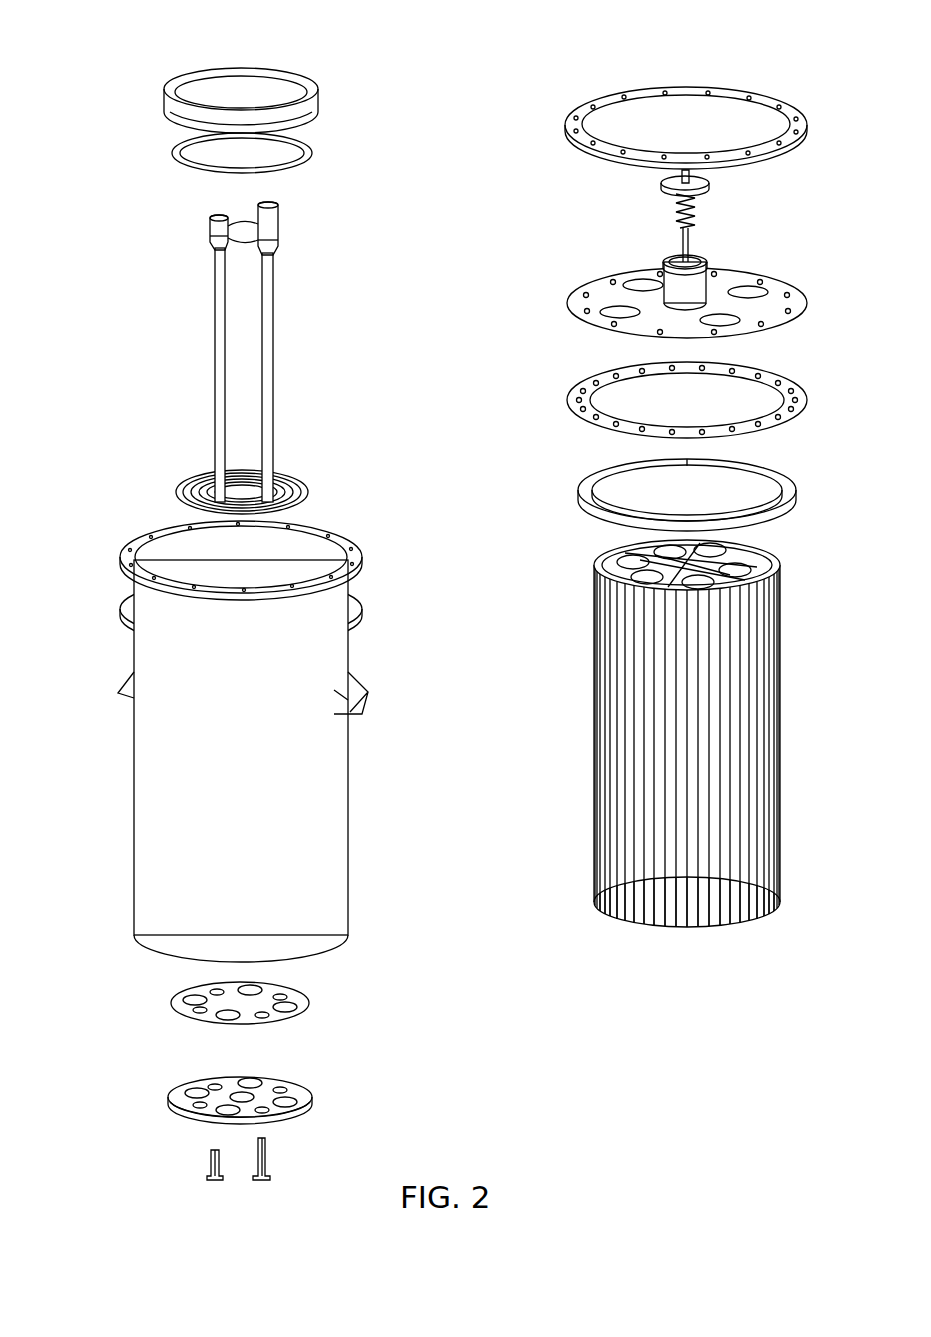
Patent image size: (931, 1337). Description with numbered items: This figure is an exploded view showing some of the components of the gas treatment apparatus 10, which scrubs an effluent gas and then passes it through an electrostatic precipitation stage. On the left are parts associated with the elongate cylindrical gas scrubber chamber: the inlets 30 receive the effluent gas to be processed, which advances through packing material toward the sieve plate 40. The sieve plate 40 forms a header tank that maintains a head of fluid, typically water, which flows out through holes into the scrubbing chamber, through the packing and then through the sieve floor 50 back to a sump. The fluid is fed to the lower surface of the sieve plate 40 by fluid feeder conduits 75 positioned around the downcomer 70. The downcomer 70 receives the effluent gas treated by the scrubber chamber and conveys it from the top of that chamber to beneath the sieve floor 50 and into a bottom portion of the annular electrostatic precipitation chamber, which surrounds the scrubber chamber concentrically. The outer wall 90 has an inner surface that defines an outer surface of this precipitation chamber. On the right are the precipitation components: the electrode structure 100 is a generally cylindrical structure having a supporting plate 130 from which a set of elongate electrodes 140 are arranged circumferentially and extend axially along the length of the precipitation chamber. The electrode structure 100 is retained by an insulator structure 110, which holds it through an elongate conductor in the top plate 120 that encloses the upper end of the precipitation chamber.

The gas treatment apparatus 10 is at (108, 42).
The inlets 30 is at (195, 1000).
The sieve plate 40 is at (165, 95).
The sieve floor 50 is at (176, 490).
The downcomer 70 is at (240, 295).
The fluid feeder conduits 75 is at (210, 232).
The outer wall 90 is at (133, 832).
The electrode structure 100 is at (778, 564).
The insulator structure 110 is at (676, 200).
The top plate 120 is at (570, 300).
The supporting plate 130 is at (603, 565).
The elongate electrodes 140 is at (595, 892).